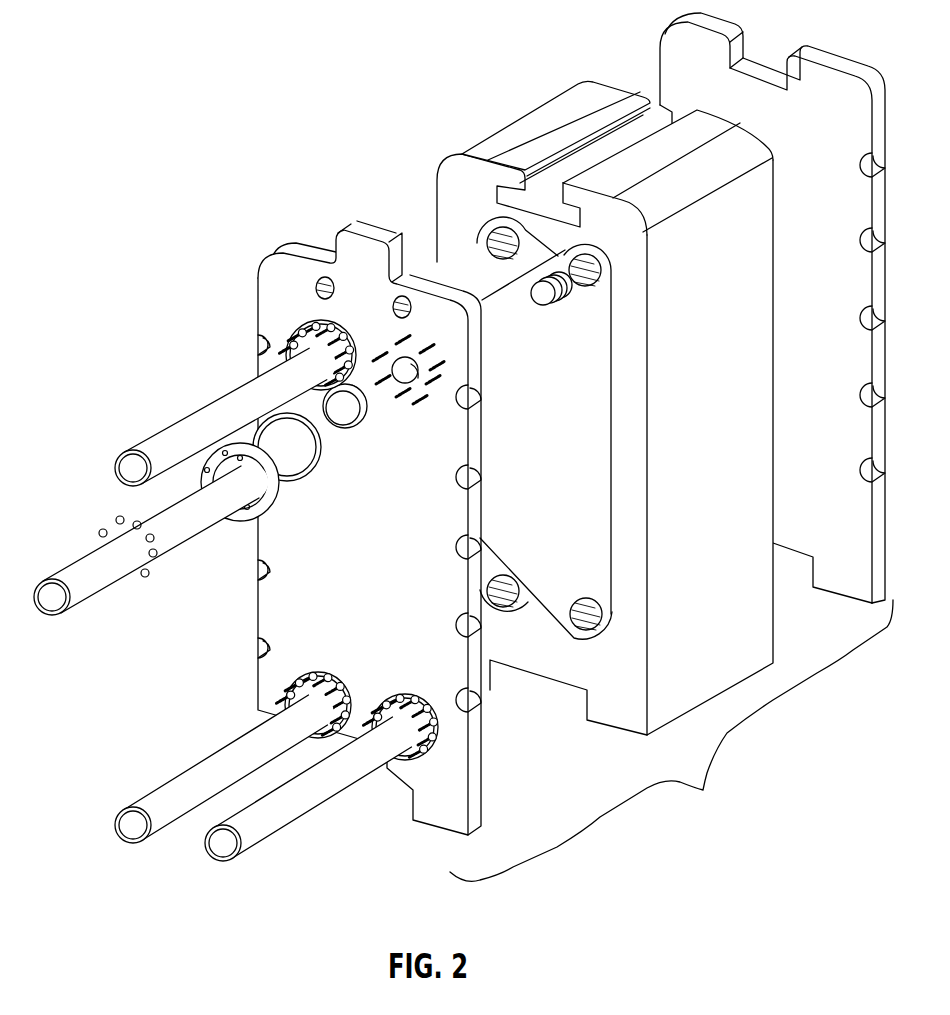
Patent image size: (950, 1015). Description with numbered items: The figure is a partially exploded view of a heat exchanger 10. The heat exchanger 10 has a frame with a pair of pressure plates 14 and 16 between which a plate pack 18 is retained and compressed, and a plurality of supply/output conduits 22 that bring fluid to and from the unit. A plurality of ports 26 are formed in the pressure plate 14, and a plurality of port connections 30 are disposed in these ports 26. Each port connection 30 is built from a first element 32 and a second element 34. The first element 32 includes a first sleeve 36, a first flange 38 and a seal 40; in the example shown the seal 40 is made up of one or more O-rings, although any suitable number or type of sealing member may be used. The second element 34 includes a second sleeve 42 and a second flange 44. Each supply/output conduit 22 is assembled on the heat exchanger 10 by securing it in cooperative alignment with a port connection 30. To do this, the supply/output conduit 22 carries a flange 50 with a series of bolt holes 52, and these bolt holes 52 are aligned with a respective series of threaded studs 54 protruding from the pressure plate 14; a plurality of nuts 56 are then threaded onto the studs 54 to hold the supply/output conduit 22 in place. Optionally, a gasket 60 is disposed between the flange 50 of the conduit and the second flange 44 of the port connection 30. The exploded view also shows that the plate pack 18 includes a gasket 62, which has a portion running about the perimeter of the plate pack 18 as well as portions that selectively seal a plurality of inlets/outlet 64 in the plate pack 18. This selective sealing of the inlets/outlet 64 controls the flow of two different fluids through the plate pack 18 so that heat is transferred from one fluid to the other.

The heat exchanger 10 is at (127, 47).
The pressure plate 14 is at (322, 262).
The pressure plate 16 is at (660, 68).
The plate pack 18 is at (445, 165).
The supply/output conduit 22 is at (148, 445).
The port 26 is at (274, 303).
The port connection 30 is at (536, 283).
The first element 32 is at (581, 305).
The second element 34 is at (347, 462).
The first sleeve 36 is at (540, 302).
The first flange 38 is at (580, 262).
The seal 40 is at (552, 300).
The second sleeve 42 is at (372, 415).
The second flange 44 is at (262, 366).
The flange 50 is at (224, 452).
The bolt holes 52 is at (248, 510).
The threaded studs 54 is at (428, 402).
The nuts 56 is at (143, 580).
The gasket 60 is at (307, 480).
The gasket 62 is at (598, 438).
The inlets/outlet 64 is at (503, 242).